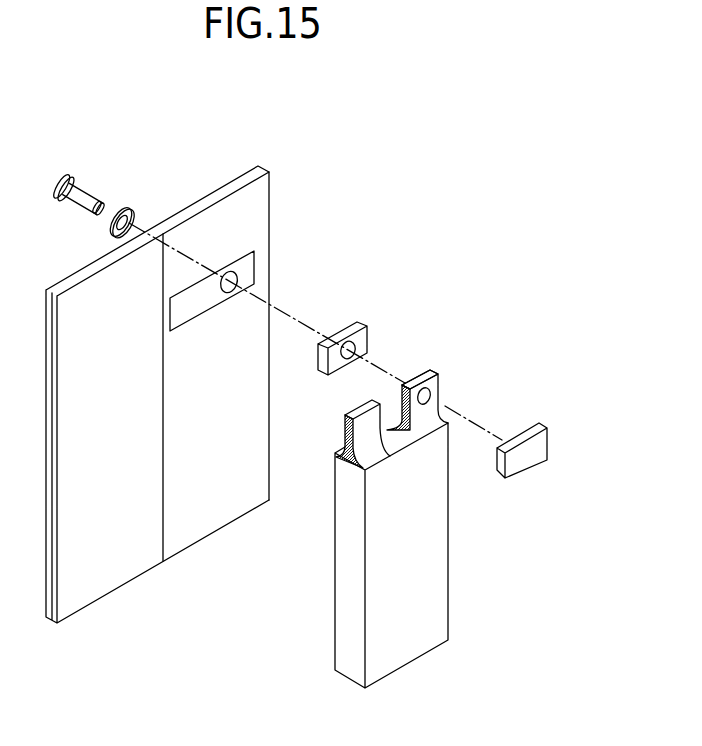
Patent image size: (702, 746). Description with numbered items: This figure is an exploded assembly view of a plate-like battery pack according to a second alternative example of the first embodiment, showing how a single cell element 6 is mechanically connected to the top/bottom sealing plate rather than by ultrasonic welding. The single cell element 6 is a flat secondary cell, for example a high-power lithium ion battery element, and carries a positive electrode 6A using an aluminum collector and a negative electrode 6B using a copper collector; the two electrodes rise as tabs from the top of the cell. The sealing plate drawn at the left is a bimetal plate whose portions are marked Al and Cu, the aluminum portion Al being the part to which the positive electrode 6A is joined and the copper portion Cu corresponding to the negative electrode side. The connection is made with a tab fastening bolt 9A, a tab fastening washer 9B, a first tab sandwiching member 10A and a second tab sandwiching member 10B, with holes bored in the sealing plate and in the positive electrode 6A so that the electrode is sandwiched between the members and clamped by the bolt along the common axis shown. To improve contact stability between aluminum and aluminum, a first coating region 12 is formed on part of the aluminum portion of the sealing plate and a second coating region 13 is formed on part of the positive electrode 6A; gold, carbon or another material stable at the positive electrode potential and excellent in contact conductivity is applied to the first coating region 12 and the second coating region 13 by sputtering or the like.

The single cell element 6 is at (423, 558).
The positive electrode 6A is at (441, 384).
The negative electrode 6B is at (370, 449).
The tab fastening bolt 9A is at (58, 172).
The tab fastening washer 9B is at (129, 205).
The first tab sandwiching member 10A is at (355, 326).
The second tab sandwiching member 10B is at (540, 444).
The first coating region 12 is at (250, 268).
The second coating region 13 is at (413, 375).
The aluminum portion of bus bar Al is at (212, 511).
The copper portion of bus bar Cu is at (107, 569).